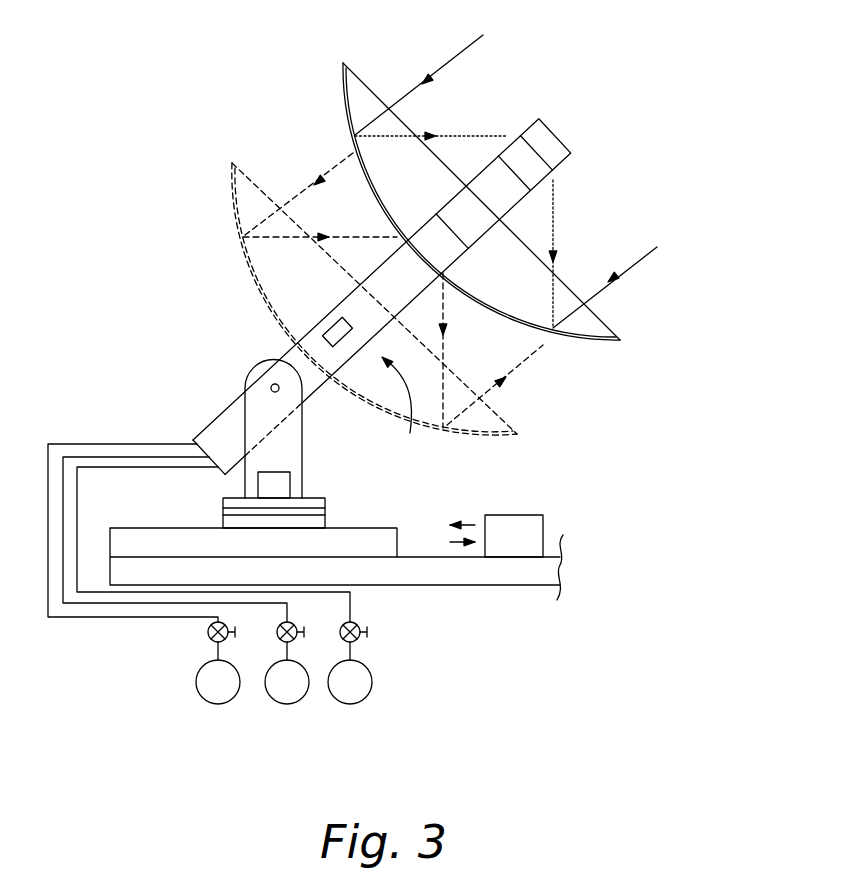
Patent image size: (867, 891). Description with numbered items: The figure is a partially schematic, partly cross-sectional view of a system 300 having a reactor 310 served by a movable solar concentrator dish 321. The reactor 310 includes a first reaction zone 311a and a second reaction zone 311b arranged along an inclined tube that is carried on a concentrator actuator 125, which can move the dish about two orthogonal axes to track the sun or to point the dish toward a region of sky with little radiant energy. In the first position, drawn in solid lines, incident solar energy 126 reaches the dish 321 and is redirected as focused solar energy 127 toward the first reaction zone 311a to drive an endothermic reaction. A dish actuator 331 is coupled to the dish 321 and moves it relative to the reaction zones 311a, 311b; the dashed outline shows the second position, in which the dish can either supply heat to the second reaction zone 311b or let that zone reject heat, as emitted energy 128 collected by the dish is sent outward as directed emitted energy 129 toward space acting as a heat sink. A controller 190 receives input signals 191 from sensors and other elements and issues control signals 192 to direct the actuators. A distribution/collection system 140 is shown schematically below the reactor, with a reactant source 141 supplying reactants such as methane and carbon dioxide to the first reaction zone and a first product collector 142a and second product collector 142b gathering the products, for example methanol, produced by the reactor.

The system 300 is at (140, 193).
The dish 321 is at (340, 84).
The incident solar energy 126 is at (633, 263).
The focused solar energy 127 is at (556, 208).
The emitted energy 128 is at (365, 232).
The directed emitted energy 129 is at (332, 167).
The first reaction zone 311a is at (576, 164).
The second reaction zone 311b is at (470, 268).
The dish actuator 331 is at (327, 320).
The reactor 310 is at (403, 415).
The concentrator actuator 125 is at (293, 482).
The controller 190 is at (547, 527).
The input signals 191 is at (453, 545).
The control signals 192 is at (466, 522).
The distribution/collection system 140 is at (275, 621).
The reactant source 141 is at (220, 716).
The first product collector 142a is at (288, 716).
The second product collector 142b is at (351, 716).